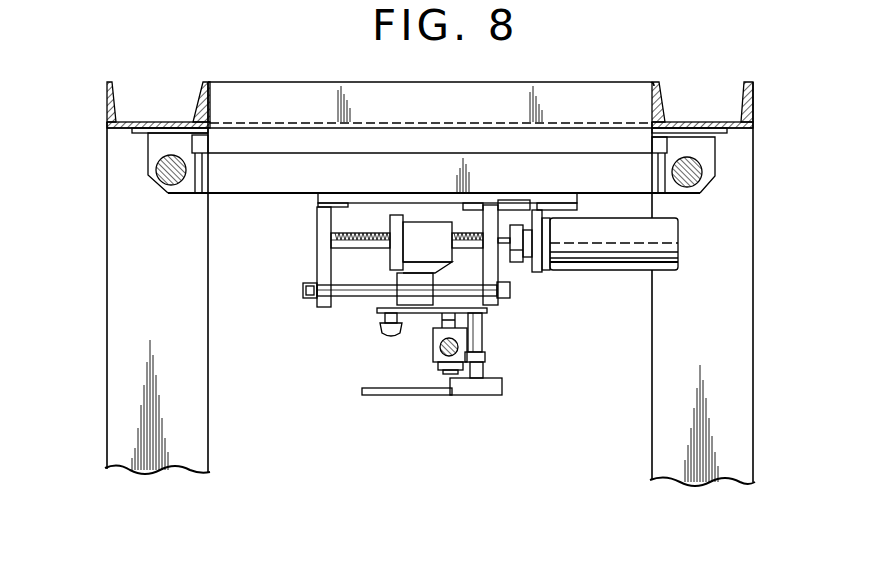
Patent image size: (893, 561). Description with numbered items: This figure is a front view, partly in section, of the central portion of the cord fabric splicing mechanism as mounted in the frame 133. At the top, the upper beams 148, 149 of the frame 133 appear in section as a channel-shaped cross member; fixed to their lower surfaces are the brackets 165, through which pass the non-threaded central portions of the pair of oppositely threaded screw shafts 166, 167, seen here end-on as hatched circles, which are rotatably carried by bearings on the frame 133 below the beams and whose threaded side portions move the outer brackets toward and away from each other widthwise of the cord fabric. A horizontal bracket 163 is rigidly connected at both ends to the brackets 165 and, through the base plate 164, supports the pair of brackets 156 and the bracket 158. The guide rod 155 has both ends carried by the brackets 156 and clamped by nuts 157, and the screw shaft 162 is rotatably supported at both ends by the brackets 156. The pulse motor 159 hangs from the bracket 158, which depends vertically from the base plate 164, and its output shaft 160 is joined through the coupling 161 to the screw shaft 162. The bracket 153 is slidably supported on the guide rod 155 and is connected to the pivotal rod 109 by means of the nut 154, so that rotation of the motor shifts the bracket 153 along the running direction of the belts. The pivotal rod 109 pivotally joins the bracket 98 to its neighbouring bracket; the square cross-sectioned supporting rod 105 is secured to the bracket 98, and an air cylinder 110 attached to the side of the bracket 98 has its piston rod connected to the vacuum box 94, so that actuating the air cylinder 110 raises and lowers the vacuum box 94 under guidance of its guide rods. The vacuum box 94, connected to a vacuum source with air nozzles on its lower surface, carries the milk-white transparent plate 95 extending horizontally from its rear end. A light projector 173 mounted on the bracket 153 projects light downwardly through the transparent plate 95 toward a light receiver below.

The vacuum box 94 is at (502, 386).
The milk-white transparent plate 95 is at (368, 394).
The bracket 98 is at (433, 353).
The supporting rod 105 is at (435, 357).
The pivotal rod 109 is at (437, 315).
The air cylinder 110 is at (482, 323).
The frame 133 is at (123, 388).
The upper beam 148 is at (107, 100).
The upper beam 149 is at (753, 108).
The bracket 153 is at (405, 278).
The nut 154 is at (457, 283).
The guide rod 155 is at (340, 280).
The bracket 156 is at (322, 215).
The nut 157 is at (312, 298).
The bracket 158 is at (533, 272).
The pulse motor 159 is at (623, 267).
The output shaft 160 is at (528, 226).
The coupling 161 is at (513, 262).
The screw shaft 162 is at (365, 233).
The horizontal bracket 163 is at (325, 160).
The base plate 164 is at (390, 195).
The bracket 165 is at (153, 148).
The screw shaft 166 is at (160, 186).
The screw shaft 167 is at (684, 186).
The light projector 173 is at (383, 327).